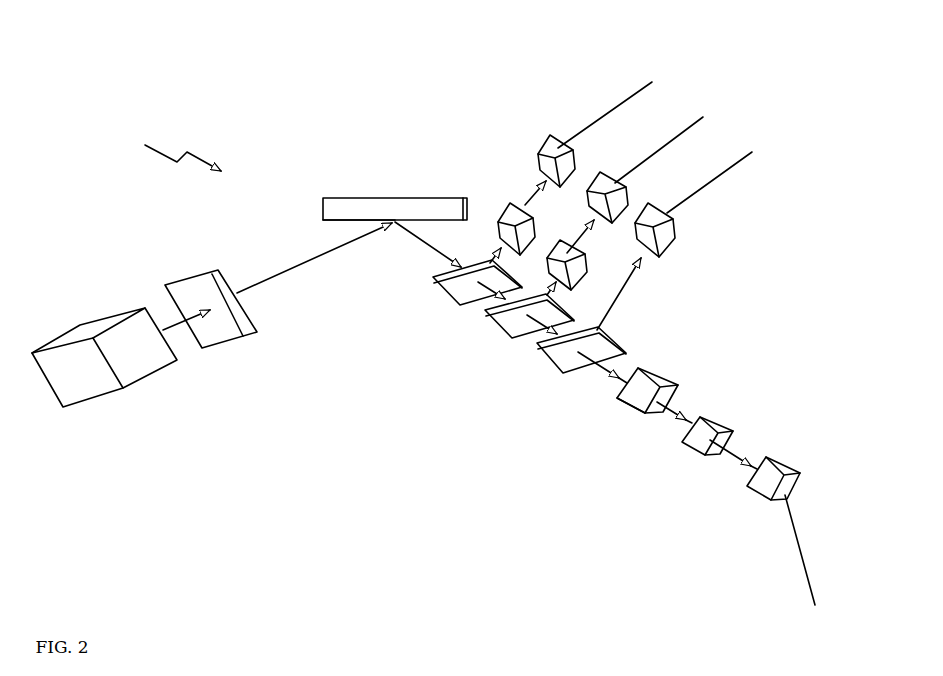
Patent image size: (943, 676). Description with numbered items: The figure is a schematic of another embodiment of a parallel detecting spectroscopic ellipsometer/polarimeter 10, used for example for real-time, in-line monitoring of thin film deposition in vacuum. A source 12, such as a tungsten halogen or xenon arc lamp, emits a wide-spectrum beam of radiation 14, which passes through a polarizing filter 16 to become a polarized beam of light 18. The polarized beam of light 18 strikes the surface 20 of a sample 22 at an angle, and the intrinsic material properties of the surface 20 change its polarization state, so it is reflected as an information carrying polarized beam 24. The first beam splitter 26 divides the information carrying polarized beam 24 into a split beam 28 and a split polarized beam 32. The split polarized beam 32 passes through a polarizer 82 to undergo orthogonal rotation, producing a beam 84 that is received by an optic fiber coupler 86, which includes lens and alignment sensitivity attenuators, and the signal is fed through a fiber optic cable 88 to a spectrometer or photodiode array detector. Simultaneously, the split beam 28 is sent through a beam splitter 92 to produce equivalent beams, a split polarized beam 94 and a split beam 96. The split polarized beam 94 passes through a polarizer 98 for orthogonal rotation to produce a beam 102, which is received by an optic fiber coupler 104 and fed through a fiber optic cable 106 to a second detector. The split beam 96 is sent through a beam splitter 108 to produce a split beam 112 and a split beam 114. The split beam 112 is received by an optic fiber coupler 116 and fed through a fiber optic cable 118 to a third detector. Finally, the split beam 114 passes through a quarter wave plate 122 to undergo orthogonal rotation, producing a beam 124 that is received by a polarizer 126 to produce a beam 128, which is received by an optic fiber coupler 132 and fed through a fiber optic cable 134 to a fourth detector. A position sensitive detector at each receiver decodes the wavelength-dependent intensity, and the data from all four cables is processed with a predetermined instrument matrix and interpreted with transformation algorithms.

The parallel detecting spectroscopic ellipsometer/polarimeter 10 is at (168, 148).
The source 12 is at (80, 380).
The beam of radiation 14 is at (180, 327).
The polarizing filter 16 is at (207, 332).
The polarized beam of light 18 is at (307, 267).
The surface 20 is at (352, 222).
The sample 22 is at (412, 198).
The information carrying polarized beam 24 is at (412, 222).
The first beam splitter 26 is at (455, 297).
The split beam 28 is at (483, 306).
The split polarized beam 32 is at (490, 260).
The polarizer 82 is at (505, 203).
The beam 84 is at (527, 203).
The optic fiber coupler 86 is at (545, 138).
The fiber optic cable 88 is at (592, 123).
The beam splitter 92 is at (510, 327).
The split polarized beam 94 is at (549, 272).
The split beam 96 is at (528, 327).
The polarizer 98 is at (611, 294).
The beam 102 is at (595, 232).
The optic fiber coupler 104 is at (615, 225).
The fiber optic cable 106 is at (673, 138).
The beam splitter 108 is at (573, 365).
The split beam 112 is at (638, 265).
The split beam 114 is at (603, 372).
The optic fiber coupler 116 is at (662, 257).
The fiber optic cable 118 is at (733, 170).
The quarter wave plate 122 is at (642, 403).
The beam 124 is at (670, 418).
The polarizer 126 is at (708, 450).
The beam 128 is at (738, 458).
The optic fiber coupler 132 is at (773, 497).
The fiber optic cable 134 is at (808, 567).